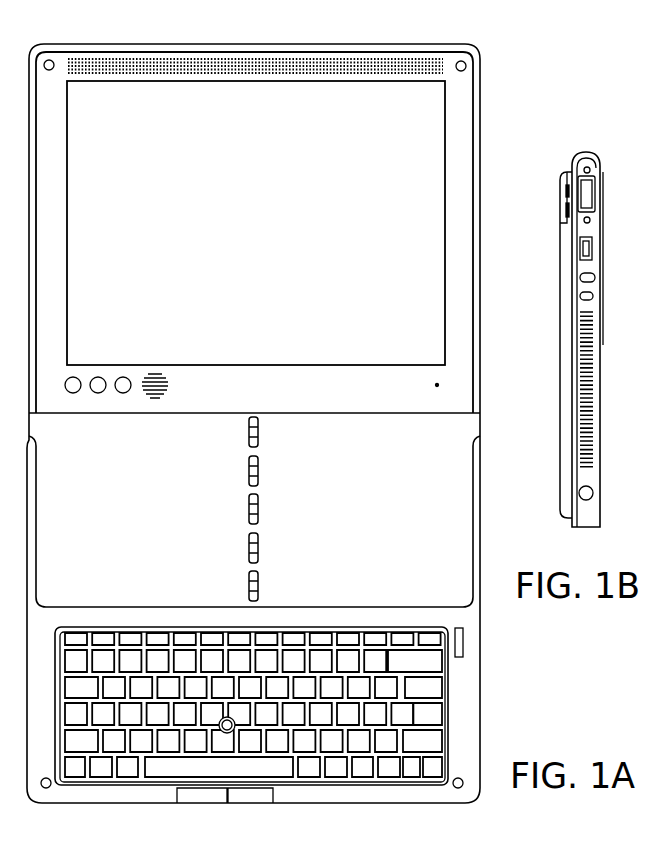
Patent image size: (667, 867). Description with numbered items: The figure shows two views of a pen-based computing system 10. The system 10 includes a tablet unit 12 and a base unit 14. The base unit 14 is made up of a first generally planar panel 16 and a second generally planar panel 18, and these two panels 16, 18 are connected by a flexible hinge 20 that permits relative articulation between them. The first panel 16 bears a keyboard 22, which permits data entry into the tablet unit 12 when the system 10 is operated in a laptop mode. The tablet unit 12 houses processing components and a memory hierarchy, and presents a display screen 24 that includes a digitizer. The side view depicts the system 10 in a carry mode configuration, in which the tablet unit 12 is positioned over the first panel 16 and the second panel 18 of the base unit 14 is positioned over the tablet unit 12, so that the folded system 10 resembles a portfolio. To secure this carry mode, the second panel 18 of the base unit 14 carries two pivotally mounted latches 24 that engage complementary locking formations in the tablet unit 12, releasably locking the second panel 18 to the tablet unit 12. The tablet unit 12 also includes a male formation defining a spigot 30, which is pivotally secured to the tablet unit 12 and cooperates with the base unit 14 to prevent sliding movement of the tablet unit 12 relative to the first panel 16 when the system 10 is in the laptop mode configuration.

In FIG. 1A, the computing system 10 is at (492, 57).
In FIG. 1B, the computing system 10 is at (603, 92).
In FIG. 1B, the tablet unit 12 is at (600, 440).
In FIG. 1A, the base unit 14 is at (494, 635).
In FIG. 1B, the base unit 14 is at (545, 330).
In FIG. 1B, the first panel 16 is at (560, 405).
In FIG. 1B, the second panel 18 is at (605, 228).
In FIG. 1B, the flexible hinge 20 is at (588, 152).
In FIG. 1A, the keyboard 22 is at (388, 763).
In FIG. 1A, the display screen 24 is at (265, 239).
In FIG. 1A, the spigot 30 is at (453, 252).